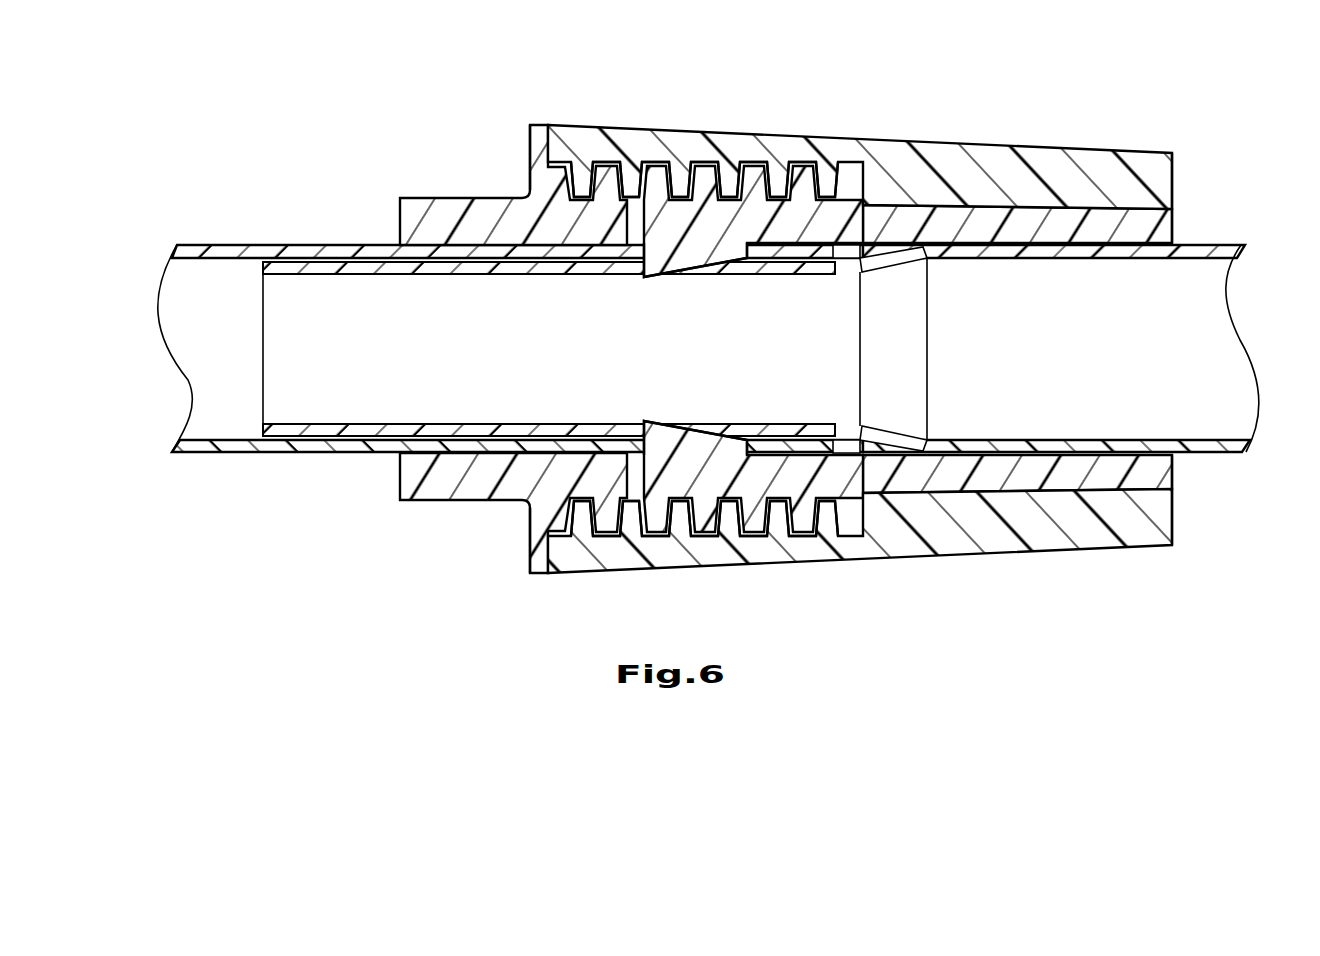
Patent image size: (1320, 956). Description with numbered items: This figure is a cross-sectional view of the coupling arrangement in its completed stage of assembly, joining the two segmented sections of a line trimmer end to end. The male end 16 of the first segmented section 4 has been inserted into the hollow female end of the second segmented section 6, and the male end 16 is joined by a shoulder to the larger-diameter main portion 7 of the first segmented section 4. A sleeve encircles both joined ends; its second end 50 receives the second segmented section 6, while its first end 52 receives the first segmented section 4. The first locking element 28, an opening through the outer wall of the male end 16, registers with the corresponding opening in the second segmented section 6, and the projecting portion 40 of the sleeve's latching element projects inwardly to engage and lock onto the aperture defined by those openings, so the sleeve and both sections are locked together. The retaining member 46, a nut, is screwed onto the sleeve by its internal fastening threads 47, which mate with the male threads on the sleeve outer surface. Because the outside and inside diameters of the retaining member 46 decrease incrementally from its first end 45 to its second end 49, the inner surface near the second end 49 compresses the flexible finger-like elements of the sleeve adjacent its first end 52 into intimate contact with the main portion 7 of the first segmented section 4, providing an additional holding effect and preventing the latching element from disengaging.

The first segmented section 4 is at (1209, 457).
The second segmented section 6 is at (203, 242).
The main portion 7 is at (1230, 243).
The male end 16 is at (260, 357).
The first locking element 28 is at (738, 265).
The projecting portion 40 is at (674, 284).
The first end of retaining member 45 is at (547, 128).
The retaining member 46 is at (878, 134).
The fastening threads 47 is at (726, 176).
The second end of retaining member 49 is at (1172, 172).
The second end of sleeve 50 is at (398, 222).
The first end of sleeve 52 is at (1172, 225).